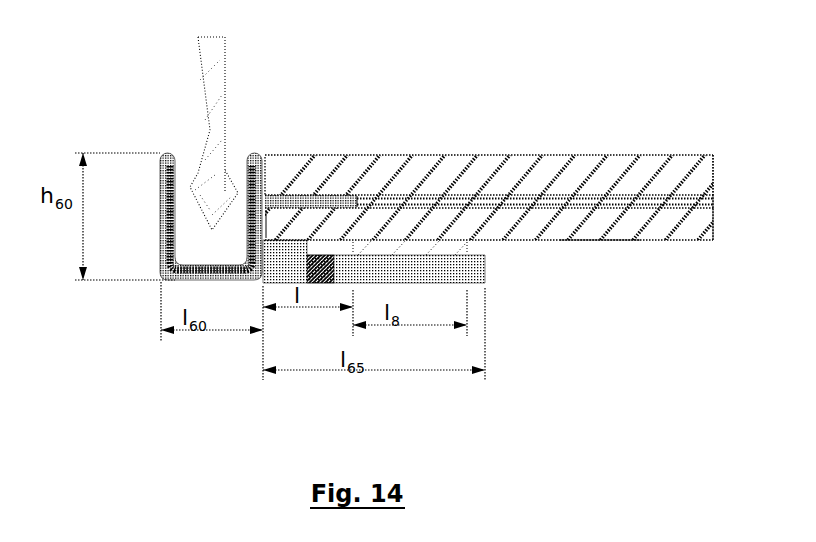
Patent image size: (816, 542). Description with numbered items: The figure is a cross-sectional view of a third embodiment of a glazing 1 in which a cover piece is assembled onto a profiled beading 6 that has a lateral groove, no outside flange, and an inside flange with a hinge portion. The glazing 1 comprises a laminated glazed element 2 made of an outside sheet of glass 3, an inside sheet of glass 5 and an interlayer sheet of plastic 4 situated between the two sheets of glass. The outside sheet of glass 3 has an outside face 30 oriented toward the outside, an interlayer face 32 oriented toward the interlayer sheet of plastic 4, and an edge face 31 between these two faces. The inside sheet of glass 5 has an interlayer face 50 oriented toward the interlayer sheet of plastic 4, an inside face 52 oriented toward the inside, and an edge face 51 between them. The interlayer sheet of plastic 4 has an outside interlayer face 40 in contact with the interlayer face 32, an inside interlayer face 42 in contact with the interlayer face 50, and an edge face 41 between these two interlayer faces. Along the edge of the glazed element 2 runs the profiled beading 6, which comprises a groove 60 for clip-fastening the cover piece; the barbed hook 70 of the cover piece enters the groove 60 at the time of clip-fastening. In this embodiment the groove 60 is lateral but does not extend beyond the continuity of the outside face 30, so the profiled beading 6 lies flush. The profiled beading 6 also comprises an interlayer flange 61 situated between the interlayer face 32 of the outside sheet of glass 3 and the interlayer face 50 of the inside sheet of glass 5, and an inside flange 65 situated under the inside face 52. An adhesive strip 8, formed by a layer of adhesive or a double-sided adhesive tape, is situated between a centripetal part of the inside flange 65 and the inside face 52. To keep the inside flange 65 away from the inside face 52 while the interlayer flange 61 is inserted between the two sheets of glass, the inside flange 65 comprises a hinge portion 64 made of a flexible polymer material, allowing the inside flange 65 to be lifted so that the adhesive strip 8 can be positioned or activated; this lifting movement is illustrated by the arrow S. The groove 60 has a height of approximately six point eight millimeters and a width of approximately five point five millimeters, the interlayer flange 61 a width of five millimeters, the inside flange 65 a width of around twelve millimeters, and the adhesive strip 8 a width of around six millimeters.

The glazing 1 is at (493, 188).
The laminated glazed element 2 is at (687, 103).
The outside sheet of glass 3 is at (707, 188).
The interlayer sheet of plastic 4 is at (713, 204).
The inside sheet of glass 5 is at (713, 233).
The profiled beading 6 is at (171, 128).
The adhesive strip 8 is at (423, 249).
The outside face 30 is at (540, 153).
The edge face 31 is at (263, 177).
The interlayer face 32 is at (545, 195).
The outside interlayer face 40 is at (638, 197).
The edge face 41 is at (368, 203).
The inside interlayer face 42 is at (650, 208).
The interlayer face 50 is at (610, 208).
The edge face 51 is at (268, 227).
The inside face 52 is at (601, 244).
The groove 60 is at (202, 247).
The interlayer flange 61 is at (327, 202).
The hinge portion 64 is at (327, 270).
The inside flange 65 is at (288, 273).
The barbed hook 70 is at (223, 100).
The arrow S is at (489, 344).